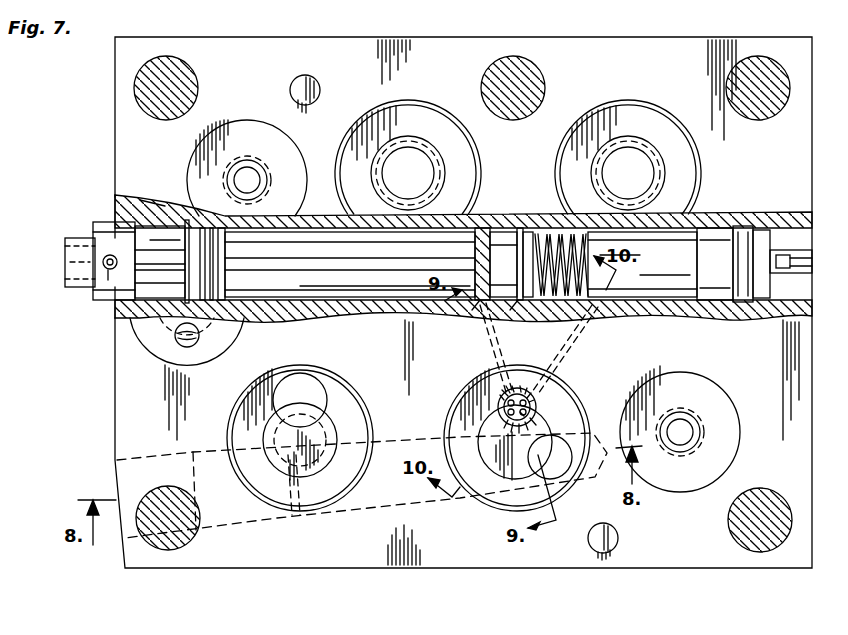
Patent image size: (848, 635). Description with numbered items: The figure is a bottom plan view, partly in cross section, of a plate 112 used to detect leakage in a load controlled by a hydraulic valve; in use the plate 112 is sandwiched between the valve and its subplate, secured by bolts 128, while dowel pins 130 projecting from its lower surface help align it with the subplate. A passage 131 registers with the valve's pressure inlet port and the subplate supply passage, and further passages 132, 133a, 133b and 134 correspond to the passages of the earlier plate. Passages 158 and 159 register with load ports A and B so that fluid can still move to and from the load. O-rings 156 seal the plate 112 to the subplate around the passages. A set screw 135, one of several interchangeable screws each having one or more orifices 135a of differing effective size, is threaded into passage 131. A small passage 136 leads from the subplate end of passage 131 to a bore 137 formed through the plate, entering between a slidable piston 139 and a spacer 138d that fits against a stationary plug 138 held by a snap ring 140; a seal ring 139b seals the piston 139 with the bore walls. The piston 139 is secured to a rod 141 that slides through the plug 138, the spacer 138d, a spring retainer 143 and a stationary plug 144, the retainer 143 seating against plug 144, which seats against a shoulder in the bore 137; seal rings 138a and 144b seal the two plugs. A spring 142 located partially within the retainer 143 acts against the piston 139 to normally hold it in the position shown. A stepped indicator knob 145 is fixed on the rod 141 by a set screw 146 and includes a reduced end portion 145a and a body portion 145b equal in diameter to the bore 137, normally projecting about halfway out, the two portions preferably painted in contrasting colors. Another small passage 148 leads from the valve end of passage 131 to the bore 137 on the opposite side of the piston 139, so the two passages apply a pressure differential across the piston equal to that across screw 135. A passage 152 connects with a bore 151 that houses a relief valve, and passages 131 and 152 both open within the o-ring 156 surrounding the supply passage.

The plate 112 is at (118, 116).
The bolts 128 is at (190, 80).
The dowel pins 130 is at (312, 88).
The passage 131 is at (486, 402).
The passage 132 is at (200, 338).
The passage 133a is at (296, 136).
The passage 133b is at (690, 432).
The passage 134 is at (306, 386).
The set screw 135 is at (504, 398).
The orifices 135a is at (525, 407).
The passage 136 is at (478, 316).
The bore 137 is at (152, 212).
The stationary plug 138 is at (195, 256).
The seal ring 138a is at (205, 271).
The spacer 138d is at (350, 288).
The slidable piston 139 is at (495, 248).
The seal ring 139b is at (516, 312).
The snap ring 140 is at (170, 224).
The rod 141 is at (145, 262).
The spring 142 is at (548, 232).
The spring retainer 143 is at (662, 284).
The stationary plug 144 is at (718, 236).
The seal ring 144b is at (750, 262).
The stepped indicator knob 145 is at (74, 254).
The end portion 145a is at (68, 248).
The body portion 145b is at (100, 222).
The set screw 146 is at (108, 270).
The passage 148 is at (582, 332).
The bore 151 is at (380, 512).
The passage 152 is at (560, 472).
The o-rings 156 is at (422, 106).
The passage 158 is at (425, 173).
The passage 159 is at (642, 175).